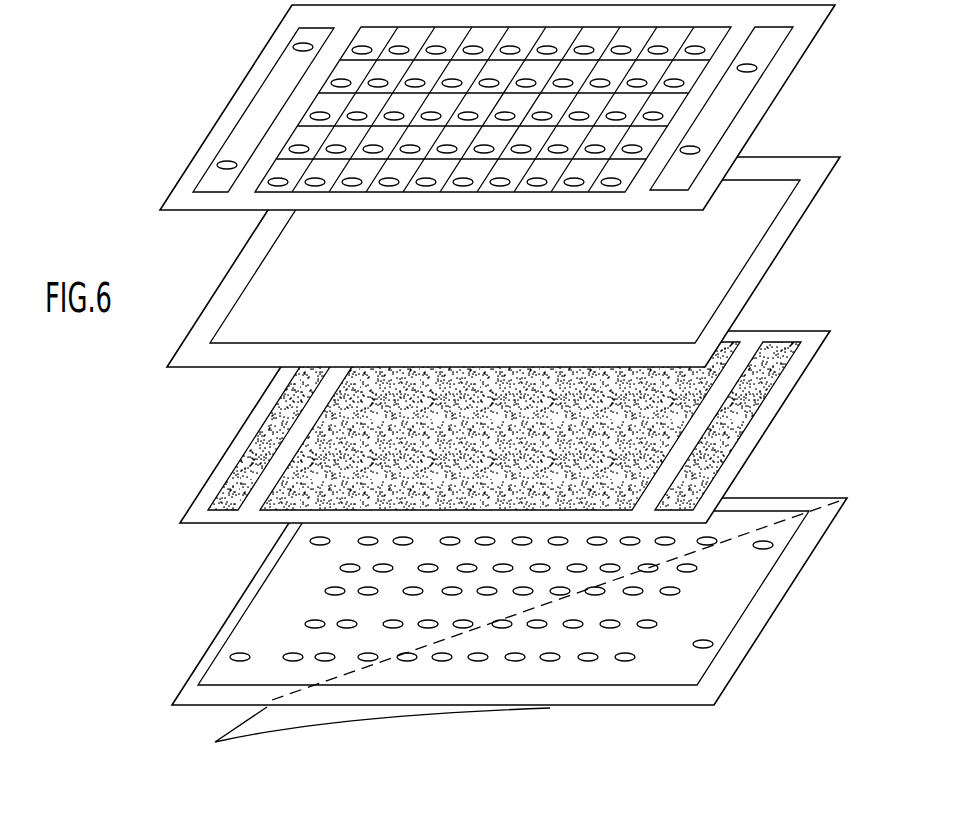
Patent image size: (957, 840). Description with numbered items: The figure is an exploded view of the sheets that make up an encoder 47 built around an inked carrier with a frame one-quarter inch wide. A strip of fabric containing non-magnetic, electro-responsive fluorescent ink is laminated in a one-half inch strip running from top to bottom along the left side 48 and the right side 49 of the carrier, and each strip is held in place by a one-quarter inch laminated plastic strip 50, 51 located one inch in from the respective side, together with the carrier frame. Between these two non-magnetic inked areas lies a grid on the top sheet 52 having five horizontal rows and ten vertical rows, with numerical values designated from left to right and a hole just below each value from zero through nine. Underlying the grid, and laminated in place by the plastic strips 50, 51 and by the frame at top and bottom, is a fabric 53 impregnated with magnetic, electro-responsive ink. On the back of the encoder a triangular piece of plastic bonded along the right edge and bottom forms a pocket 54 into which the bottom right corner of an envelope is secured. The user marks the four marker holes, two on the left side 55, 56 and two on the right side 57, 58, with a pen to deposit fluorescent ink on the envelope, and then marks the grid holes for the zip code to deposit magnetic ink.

The encoder 47 is at (737, 333).
The left non-magnetic inked fabric strip 48 is at (718, 450).
The right non-magnetic inked fabric strip 49 is at (290, 405).
The left laminated plastic strip 50 is at (725, 388).
The right laminated plastic strip 51 is at (298, 432).
The top sheet 52 is at (433, 197).
The magnetic inked fabric 53 is at (314, 482).
The pocket 54 is at (278, 724).
The left upper marker hole 55 is at (294, 47).
The left lower marker hole 56 is at (218, 163).
The right upper marker hole 57 is at (757, 70).
The right lower marker hole 58 is at (700, 150).